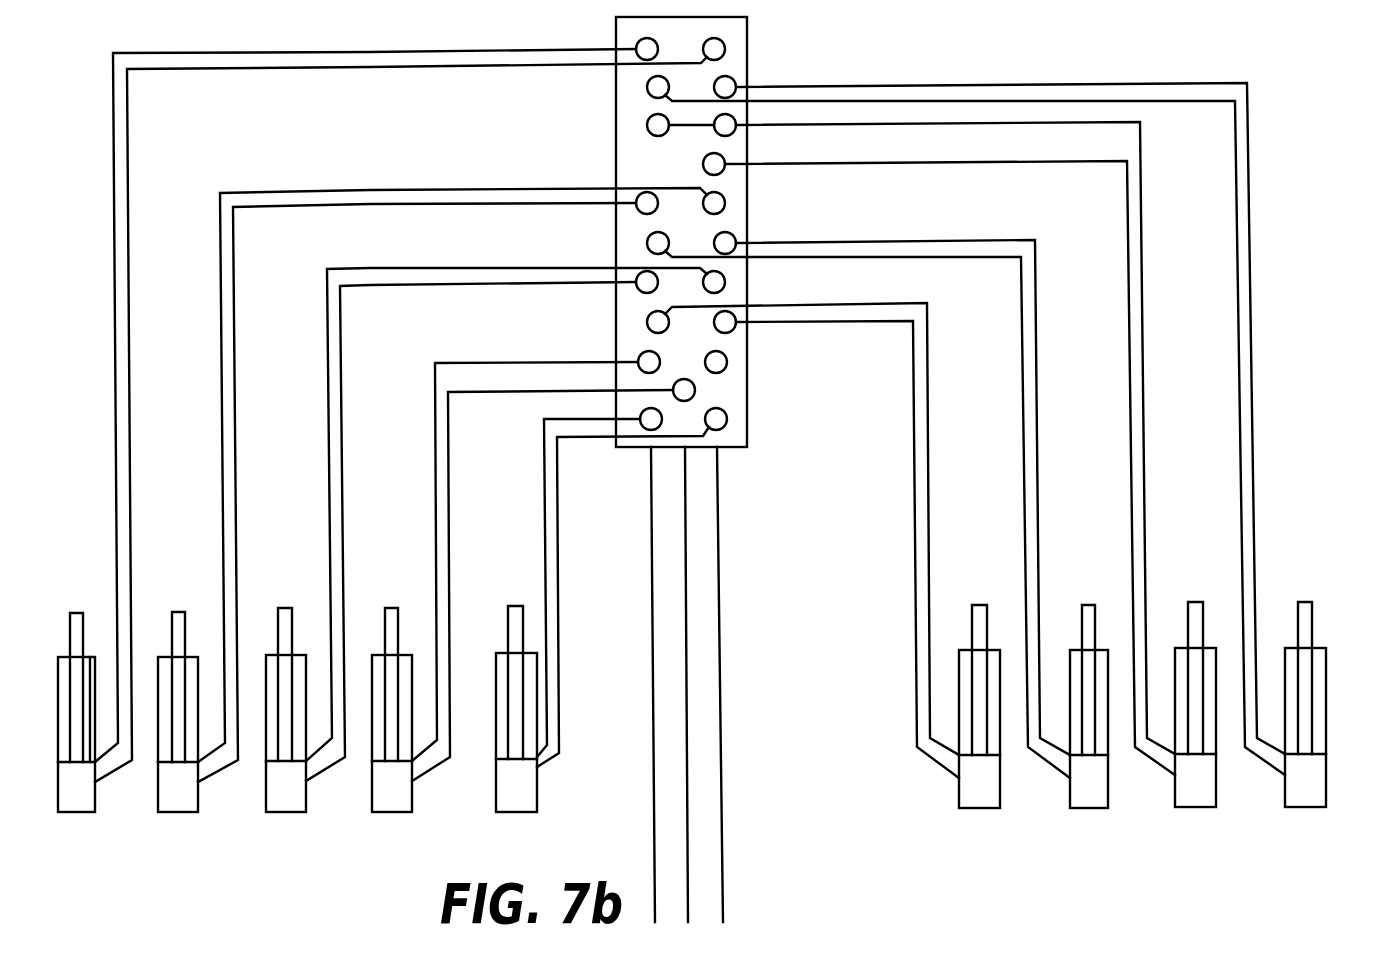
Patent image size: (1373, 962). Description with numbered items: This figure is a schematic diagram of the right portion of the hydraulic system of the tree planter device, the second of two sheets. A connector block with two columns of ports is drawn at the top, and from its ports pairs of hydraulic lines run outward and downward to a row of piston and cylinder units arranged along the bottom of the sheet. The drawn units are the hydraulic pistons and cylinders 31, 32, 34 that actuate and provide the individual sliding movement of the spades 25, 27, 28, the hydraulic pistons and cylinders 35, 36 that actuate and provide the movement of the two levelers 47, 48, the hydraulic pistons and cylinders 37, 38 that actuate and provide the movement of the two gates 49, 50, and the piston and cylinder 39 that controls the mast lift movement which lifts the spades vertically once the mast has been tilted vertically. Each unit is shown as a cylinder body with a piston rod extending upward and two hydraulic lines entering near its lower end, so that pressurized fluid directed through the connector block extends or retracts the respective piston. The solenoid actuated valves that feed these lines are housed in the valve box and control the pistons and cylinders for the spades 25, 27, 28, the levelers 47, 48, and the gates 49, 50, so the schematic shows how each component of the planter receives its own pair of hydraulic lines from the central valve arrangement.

The spade 25 is at (82, 812).
The spade 27 is at (1307, 807).
The spade 28 is at (984, 808).
The hydraulic piston and cylinder 31 is at (47, 766).
The hydraulic piston and cylinder 32 is at (475, 763).
The hydraulic piston and cylinder 34 is at (929, 774).
The hydraulic piston and cylinder 35 is at (147, 767).
The hydraulic piston and cylinder 36 is at (395, 812).
The hydraulic piston and cylinder 37 is at (256, 767).
The hydraulic piston and cylinder 38 is at (1019, 774).
The piston and cylinder 39 is at (574, 763).
The leveler 47 is at (185, 812).
The leveler 48 is at (1198, 807).
The gate 49 is at (296, 812).
The gate 50 is at (1092, 808).